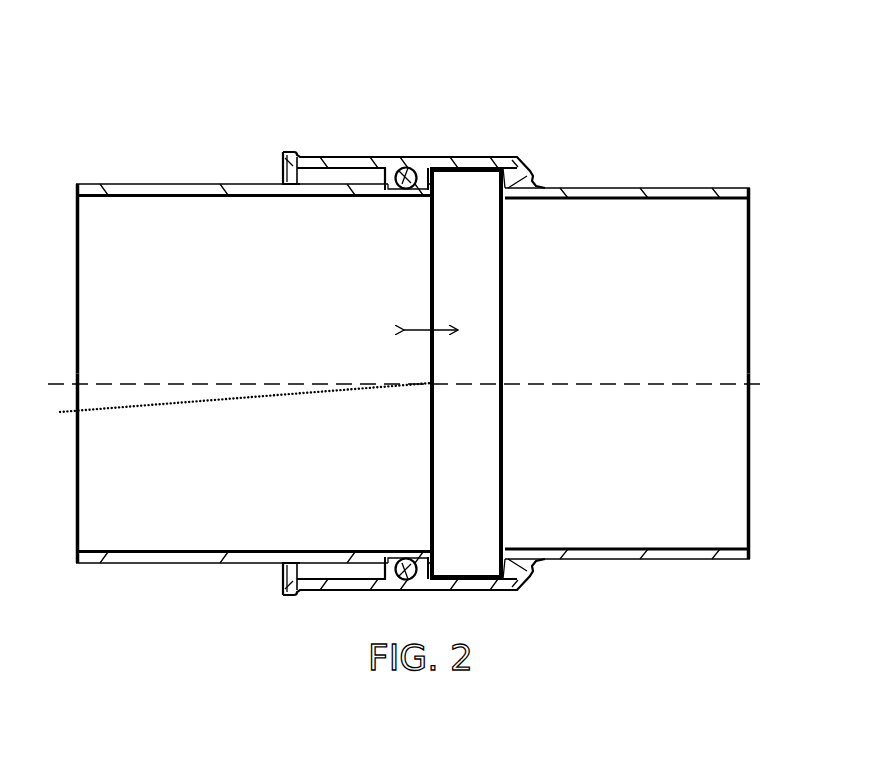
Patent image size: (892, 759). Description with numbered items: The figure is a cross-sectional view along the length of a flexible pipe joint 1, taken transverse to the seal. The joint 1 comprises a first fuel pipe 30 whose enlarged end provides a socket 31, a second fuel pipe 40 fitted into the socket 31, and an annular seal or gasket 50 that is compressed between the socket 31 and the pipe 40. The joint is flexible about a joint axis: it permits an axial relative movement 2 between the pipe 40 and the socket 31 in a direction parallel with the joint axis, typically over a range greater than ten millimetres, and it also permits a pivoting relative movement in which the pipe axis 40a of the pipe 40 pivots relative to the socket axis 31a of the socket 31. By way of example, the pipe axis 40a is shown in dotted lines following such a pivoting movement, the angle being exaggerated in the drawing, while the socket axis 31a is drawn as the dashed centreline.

The pipe joint 1 is at (456, 128).
The axial relative movement 2 is at (402, 333).
The first fuel pipe 30 is at (648, 188).
The socket 31 is at (466, 170).
The socket axis 31a is at (648, 383).
The second fuel pipe 40 is at (182, 184).
The pipe axis 40a is at (240, 383).
The annular seal 50 is at (404, 189).